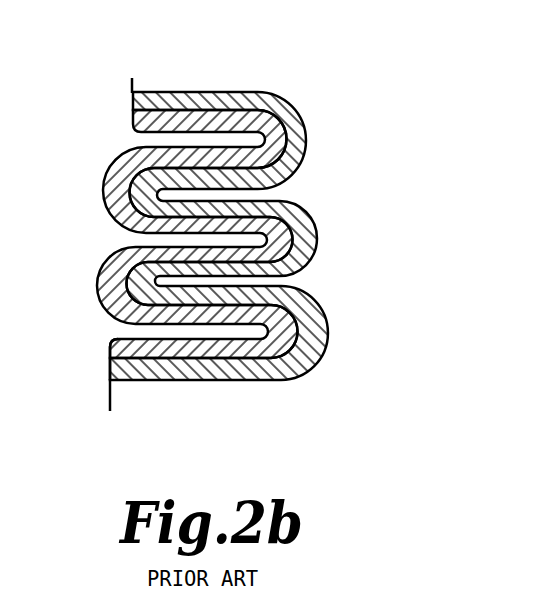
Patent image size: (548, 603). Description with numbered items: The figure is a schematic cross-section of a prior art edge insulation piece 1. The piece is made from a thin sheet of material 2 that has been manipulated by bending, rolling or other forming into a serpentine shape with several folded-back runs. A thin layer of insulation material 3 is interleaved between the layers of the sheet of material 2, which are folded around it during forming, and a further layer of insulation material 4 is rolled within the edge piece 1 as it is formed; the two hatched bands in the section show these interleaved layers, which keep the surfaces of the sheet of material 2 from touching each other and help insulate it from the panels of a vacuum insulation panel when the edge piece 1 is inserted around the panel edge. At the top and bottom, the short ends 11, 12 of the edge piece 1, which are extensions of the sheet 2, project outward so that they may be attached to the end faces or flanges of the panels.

The edge insulation piece 1 is at (167, 242).
The thin sheet of material 2 is at (110, 383).
The layer of insulation material 3 is at (287, 368).
The further layer of insulation material 4 is at (118, 168).
The end of the edge piece 11 is at (130, 81).
The end of the edge piece 12 is at (108, 407).